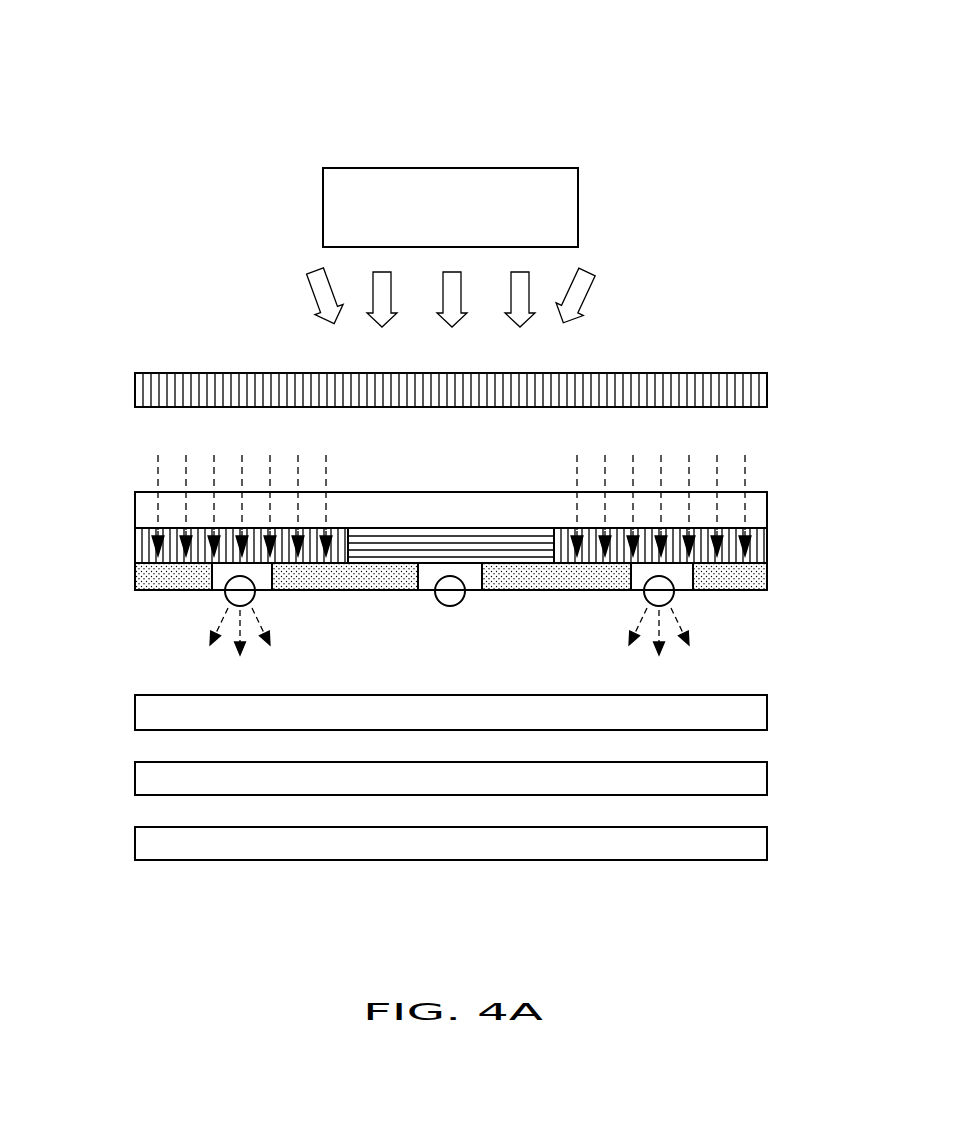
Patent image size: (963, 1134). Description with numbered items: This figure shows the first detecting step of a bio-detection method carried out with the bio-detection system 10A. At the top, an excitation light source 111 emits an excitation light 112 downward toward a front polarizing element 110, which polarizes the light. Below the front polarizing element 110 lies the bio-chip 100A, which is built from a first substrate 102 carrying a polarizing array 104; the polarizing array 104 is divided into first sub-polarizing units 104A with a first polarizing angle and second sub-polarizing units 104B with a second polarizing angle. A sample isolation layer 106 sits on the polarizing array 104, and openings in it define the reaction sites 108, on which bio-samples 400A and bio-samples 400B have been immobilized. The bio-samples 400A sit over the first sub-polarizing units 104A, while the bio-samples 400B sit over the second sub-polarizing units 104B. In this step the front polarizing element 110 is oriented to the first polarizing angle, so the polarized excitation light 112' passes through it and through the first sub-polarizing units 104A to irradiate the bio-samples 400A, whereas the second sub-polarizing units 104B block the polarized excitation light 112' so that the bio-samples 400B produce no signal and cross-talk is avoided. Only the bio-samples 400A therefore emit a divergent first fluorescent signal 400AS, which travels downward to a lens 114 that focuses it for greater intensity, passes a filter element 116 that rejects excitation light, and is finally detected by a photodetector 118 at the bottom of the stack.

The bio-detection system 10A is at (135, 68).
The bio-chip 100A is at (780, 545).
The first substrate 102 is at (135, 513).
The polarizing array 104 is at (758, 0).
The first sub-polarizing units 104A is at (135, 548).
The second sub-polarizing units 104B is at (450, 540).
The sample isolation layer 106 is at (135, 580).
The reaction sites 108 is at (477, 600).
The front polarizing element 110 is at (135, 388).
The excitation light source 111 is at (323, 207).
The excitation light 112 is at (402, 297).
The polarized excitation light 112' is at (400, 492).
The lens 114 is at (135, 712).
The filter element 116 is at (135, 779).
The photodetector 118 is at (135, 844).
The bio-samples 400A is at (222, 598).
The first fluorescent signal 400AS is at (258, 618).
The bio-samples 400B is at (451, 607).